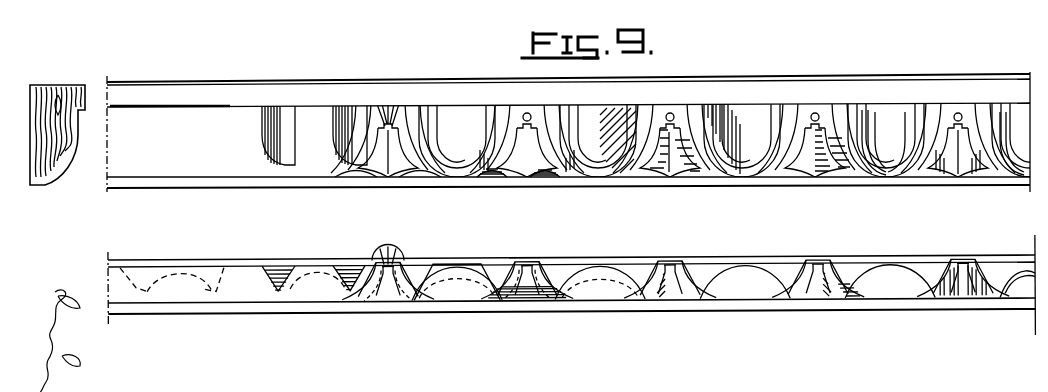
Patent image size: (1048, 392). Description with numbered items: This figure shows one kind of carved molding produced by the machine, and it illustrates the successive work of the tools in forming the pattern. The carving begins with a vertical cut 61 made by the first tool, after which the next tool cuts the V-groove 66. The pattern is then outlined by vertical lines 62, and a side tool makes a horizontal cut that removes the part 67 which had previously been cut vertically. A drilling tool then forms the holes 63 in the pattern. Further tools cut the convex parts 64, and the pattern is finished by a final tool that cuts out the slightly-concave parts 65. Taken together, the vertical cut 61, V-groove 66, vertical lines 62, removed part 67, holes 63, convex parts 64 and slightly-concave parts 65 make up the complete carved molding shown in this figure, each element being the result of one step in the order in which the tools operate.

The vertical cut 61 is at (182, 100).
The vertical lines 62 is at (391, 107).
The holes 63 is at (530, 113).
The convex parts 64 is at (633, 106).
The slightly-concave parts 65 is at (668, 171).
The V-groove 66 is at (280, 107).
The removed part 67 is at (486, 178).